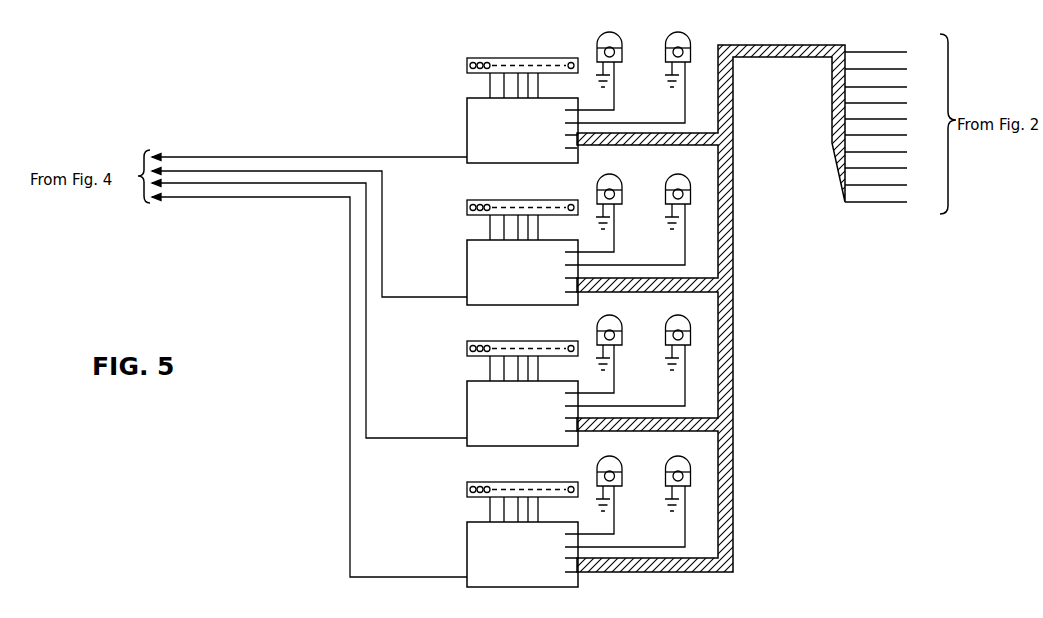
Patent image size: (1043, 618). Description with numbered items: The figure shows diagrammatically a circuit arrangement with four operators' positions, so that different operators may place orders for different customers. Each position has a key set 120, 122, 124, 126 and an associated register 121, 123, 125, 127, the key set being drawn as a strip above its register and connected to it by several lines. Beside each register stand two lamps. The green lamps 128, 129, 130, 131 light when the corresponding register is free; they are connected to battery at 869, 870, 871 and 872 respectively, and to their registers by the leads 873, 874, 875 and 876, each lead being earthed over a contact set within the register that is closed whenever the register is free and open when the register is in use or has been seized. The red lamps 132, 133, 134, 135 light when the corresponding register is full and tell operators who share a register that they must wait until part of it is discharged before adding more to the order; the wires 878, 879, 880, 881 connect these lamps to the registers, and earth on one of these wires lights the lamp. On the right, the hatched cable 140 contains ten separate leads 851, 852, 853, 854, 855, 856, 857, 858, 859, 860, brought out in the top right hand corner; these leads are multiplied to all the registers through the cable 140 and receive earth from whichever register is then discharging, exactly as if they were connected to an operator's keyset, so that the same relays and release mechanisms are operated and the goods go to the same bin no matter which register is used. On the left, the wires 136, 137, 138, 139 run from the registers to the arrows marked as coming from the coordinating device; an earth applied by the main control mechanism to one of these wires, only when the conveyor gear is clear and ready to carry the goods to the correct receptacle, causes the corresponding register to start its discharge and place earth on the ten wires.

The key set 120 is at (522, 70).
The register 121 is at (511, 130).
The key set 122 is at (522, 212).
The register 123 is at (511, 272).
The key set 124 is at (522, 353).
The register 125 is at (511, 413).
The key set 126 is at (522, 494).
The register 127 is at (511, 554).
The green lamp 128 is at (610, 38).
The green lamp 129 is at (610, 181).
The green lamp 130 is at (610, 322).
The green lamp 131 is at (610, 463).
The red lamp 132 is at (679, 51).
The red lamp 133 is at (679, 193).
The red lamp 134 is at (679, 334).
The red lamp 135 is at (679, 475).
The wire 136 is at (309, 151).
The wire 137 is at (309, 233).
The wire 138 is at (309, 310).
The wire 139 is at (309, 386).
The cable 140 is at (711, 300).
The lead 851 is at (891, 52).
The lead 852 is at (891, 69).
The lead 853 is at (891, 87).
The lead 854 is at (891, 103).
The lead 855 is at (891, 119).
The lead 856 is at (891, 135).
The lead 857 is at (891, 152).
The lead 858 is at (891, 168).
The lead 859 is at (891, 185).
The lead 860 is at (891, 202).
The battery connection 869 is at (587, 77).
The battery connection 870 is at (587, 219).
The battery connection 871 is at (587, 360).
The battery connection 872 is at (587, 501).
The lead 873 is at (610, 86).
The lead 874 is at (610, 228).
The lead 875 is at (610, 369).
The lead 876 is at (610, 510).
The wire 878 is at (631, 92).
The wire 879 is at (631, 234).
The wire 880 is at (631, 375).
The wire 881 is at (631, 516).